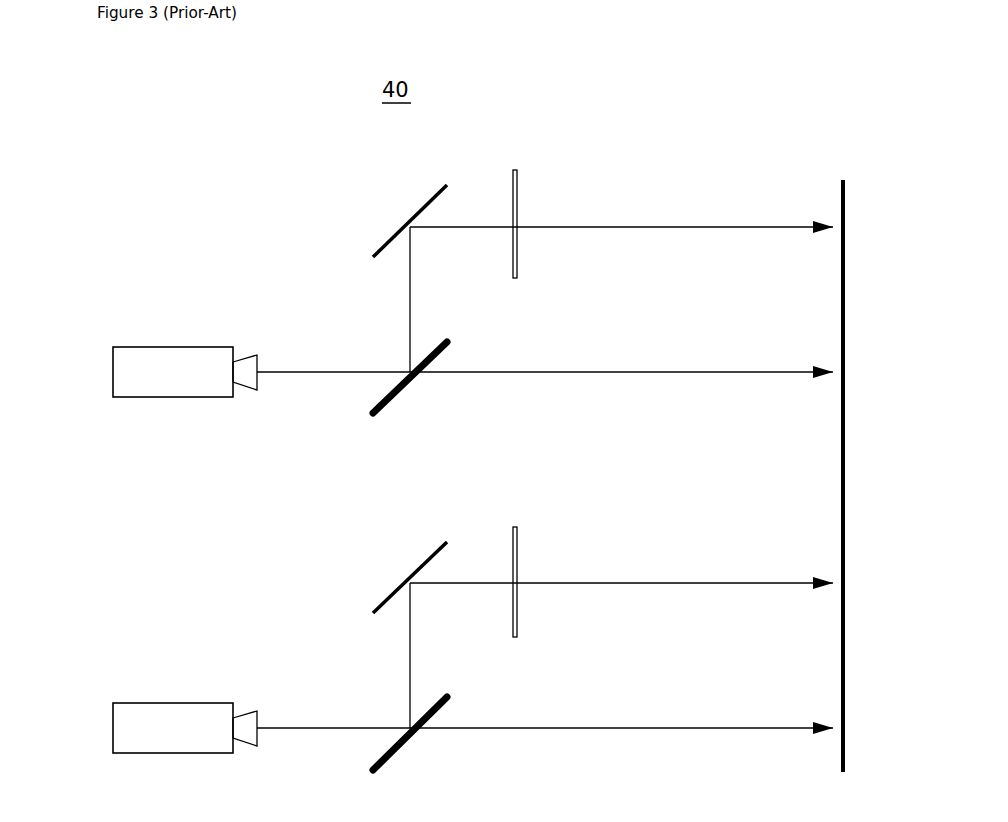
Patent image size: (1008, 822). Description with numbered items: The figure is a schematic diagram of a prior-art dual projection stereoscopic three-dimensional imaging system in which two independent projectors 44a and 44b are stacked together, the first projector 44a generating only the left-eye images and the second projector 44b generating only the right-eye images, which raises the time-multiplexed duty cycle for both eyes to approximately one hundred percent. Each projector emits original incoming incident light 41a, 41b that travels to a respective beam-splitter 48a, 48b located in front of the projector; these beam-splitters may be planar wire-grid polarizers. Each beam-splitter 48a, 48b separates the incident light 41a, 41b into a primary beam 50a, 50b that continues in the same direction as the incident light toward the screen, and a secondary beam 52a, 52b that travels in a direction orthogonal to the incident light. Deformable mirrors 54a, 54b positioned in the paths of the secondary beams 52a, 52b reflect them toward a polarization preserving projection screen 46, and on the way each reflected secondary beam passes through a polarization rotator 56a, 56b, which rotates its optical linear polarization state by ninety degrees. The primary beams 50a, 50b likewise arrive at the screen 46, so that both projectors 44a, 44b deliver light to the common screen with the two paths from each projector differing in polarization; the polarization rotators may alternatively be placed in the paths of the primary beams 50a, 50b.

The first projector 44a is at (108, 390).
The second projector 44b is at (110, 737).
The incoming incident light 41a is at (313, 360).
The incoming incident light 41b is at (310, 715).
The beam-splitter 48a is at (422, 385).
The beam-splitter 48b is at (417, 740).
The secondary beam 52a is at (418, 303).
The secondary beam 52b is at (413, 663).
The deformable mirror 54a is at (396, 212).
The deformable mirror 54b is at (398, 570).
The polarization rotator 56a is at (538, 198).
The polarization rotator 56b is at (525, 565).
The primary beam 50a is at (538, 367).
The primary beam 50b is at (560, 722).
The polarization preserving projection screen 46 is at (852, 198).